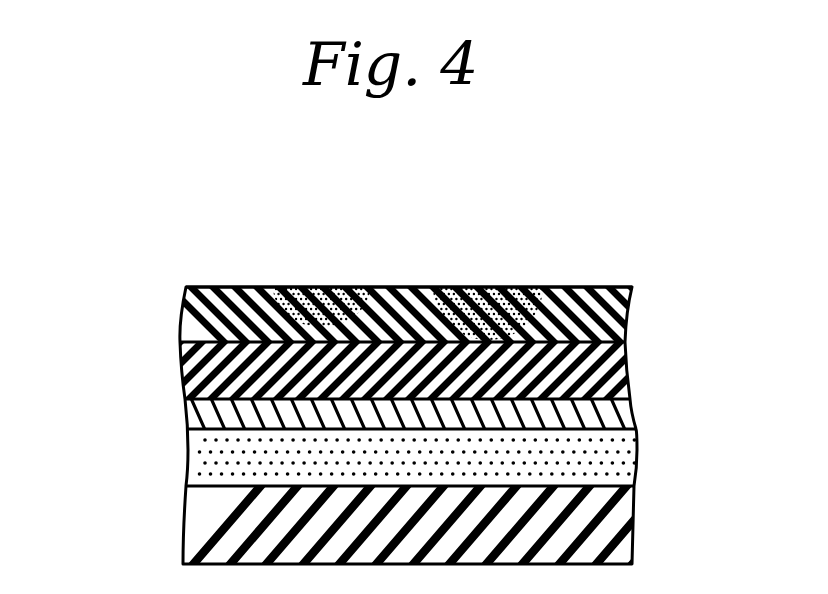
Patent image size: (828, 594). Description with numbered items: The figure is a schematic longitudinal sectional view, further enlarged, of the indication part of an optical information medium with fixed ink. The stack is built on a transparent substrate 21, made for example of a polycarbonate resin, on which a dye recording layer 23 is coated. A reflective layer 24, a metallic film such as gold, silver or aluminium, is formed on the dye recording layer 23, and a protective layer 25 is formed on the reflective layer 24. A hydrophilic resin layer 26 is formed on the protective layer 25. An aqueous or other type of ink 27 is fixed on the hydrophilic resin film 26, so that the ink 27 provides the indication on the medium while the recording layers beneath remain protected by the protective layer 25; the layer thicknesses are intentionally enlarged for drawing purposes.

The transparent substrate 21 is at (183, 524).
The dye recording layer 23 is at (190, 460).
The reflective layer 24 is at (186, 413).
The protective layer 25 is at (183, 367).
The hydrophilic resin layer 26 is at (186, 327).
The ink 27 is at (305, 288).